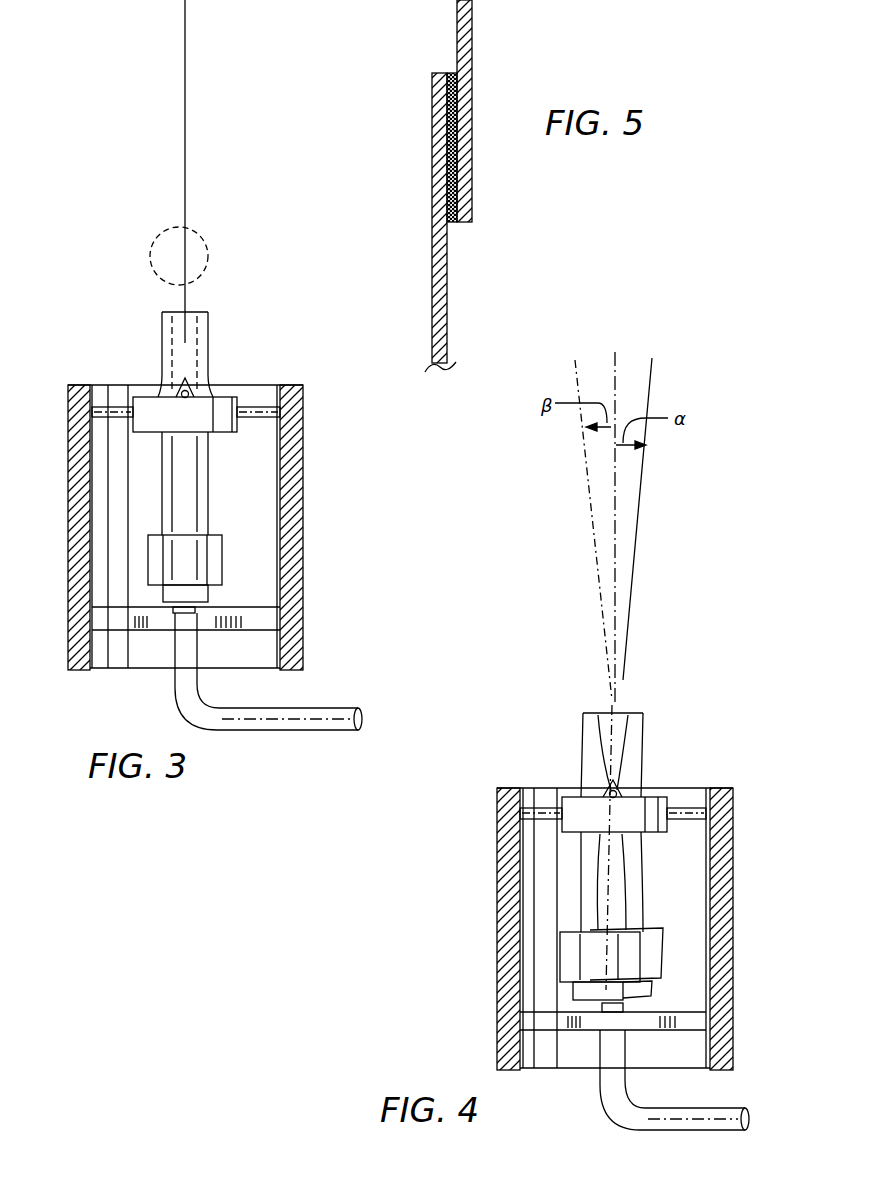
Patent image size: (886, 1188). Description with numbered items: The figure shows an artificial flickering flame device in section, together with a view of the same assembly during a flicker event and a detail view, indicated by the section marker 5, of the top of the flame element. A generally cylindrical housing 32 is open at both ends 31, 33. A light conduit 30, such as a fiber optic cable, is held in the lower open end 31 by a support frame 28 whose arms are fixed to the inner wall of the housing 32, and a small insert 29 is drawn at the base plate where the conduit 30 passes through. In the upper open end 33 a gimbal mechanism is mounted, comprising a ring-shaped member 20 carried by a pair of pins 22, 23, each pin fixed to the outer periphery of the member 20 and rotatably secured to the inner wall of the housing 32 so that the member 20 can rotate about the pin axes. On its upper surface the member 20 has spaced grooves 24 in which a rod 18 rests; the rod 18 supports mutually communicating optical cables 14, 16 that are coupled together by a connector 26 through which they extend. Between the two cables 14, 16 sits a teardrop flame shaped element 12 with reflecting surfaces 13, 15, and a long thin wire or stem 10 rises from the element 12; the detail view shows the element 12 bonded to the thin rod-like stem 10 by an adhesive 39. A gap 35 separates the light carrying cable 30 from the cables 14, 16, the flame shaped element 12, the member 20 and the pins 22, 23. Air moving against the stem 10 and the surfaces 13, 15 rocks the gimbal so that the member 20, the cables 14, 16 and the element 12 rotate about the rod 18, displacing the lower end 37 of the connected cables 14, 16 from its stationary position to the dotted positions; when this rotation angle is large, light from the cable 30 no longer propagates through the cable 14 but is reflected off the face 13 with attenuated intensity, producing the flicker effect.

In FIG. 3, the stem 10 is at (185, 63).
In FIG. 5, the stem 10 is at (470, 105).
In FIG. 3, the flame shaped element 12 is at (205, 293).
In FIG. 5, the flame shaped element 12 is at (420, 125).
In FIG. 4, the flame shaped element 12 is at (650, 678).
In FIG. 3, the reflecting surface 13 is at (187, 302).
In FIG. 4, the reflecting surface 13 is at (625, 705).
In FIG. 4, the optical cable 14 is at (622, 874).
In FIG. 3, the reflecting surface 15 is at (183, 293).
In FIG. 4, the reflecting surface 15 is at (623, 680).
In FIG. 3, the optical cable 16 is at (163, 340).
In FIG. 4, the optical cable 16 is at (580, 890).
In FIG. 3, the rod 18 is at (187, 393).
In FIG. 4, the rod 18 is at (614, 795).
In FIG. 3, the ring-shaped member 20 is at (221, 423).
In FIG. 4, the ring-shaped member 20 is at (667, 830).
In FIG. 3, the pin 22 is at (118, 397).
In FIG. 4, the pin 22 is at (543, 790).
In FIG. 3, the pin 23 is at (243, 410).
In FIG. 4, the pin 23 is at (685, 813).
In FIG. 3, the groove 24 is at (168, 400).
In FIG. 3, the connector 26 is at (217, 560).
In FIG. 4, the connector 26 is at (569, 966).
In FIG. 3, the support frame 28 is at (115, 630).
In FIG. 3, the seal insert 29 is at (177, 613).
In FIG. 3, the light conduit 30 is at (283, 732).
In FIG. 4, the light conduit 30 is at (717, 1108).
In FIG. 3, the open end 31 is at (278, 661).
In FIG. 3, the housing 32 is at (307, 638).
In FIG. 4, the housing 32 is at (733, 962).
In FIG. 3, the open end 33 is at (230, 418).
In FIG. 3, the gap 35 is at (222, 603).
In FIG. 3, the lower end 37 is at (146, 601).
In FIG. 4, the lower end 37 is at (550, 994).
In FIG. 5, the adhesive 39 is at (450, 70).
In FIG. 3, the detail view indicator 5 is at (209, 233).